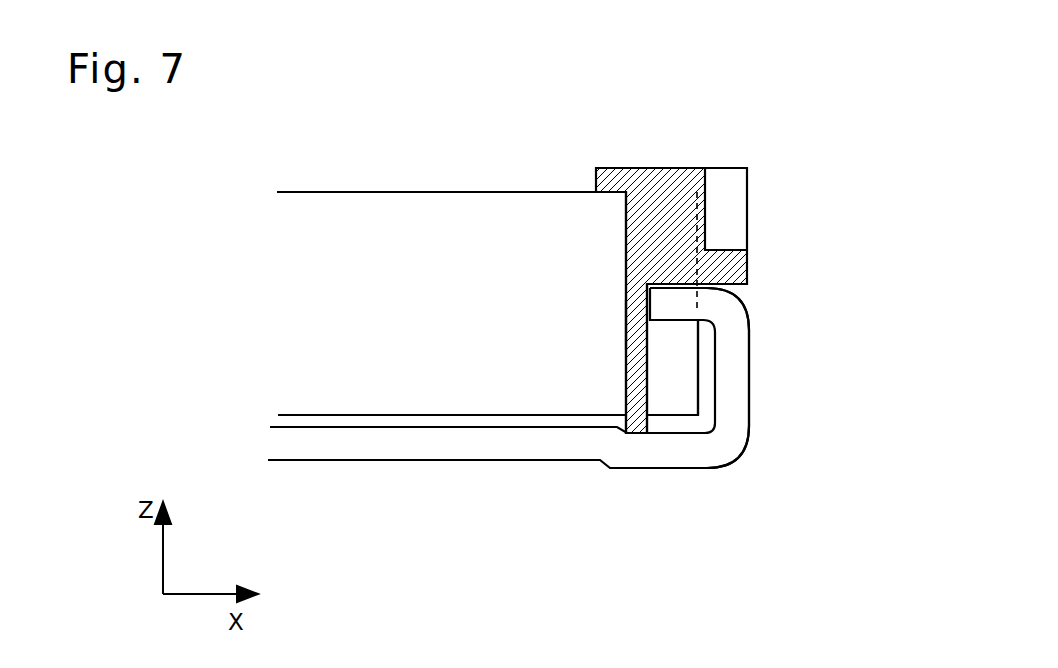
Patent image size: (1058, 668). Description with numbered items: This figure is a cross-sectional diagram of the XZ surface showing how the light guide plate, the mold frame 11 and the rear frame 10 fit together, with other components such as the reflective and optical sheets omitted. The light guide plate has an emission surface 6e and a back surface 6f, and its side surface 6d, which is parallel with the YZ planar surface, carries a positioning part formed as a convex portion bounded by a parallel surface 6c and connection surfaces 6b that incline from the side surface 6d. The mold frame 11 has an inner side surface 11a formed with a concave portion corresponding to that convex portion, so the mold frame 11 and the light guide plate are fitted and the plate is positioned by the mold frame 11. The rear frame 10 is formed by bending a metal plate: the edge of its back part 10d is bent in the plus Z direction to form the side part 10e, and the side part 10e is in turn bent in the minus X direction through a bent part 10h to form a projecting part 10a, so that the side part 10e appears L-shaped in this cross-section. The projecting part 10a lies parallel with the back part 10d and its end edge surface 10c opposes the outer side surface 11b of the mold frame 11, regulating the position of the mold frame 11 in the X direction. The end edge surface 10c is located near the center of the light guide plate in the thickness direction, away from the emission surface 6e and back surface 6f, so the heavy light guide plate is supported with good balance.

The connection surface 6b is at (670, 398).
The parallel surface 6c is at (705, 401).
The side surface 6d is at (625, 240).
The emission surface 6e is at (333, 192).
The back surface 6f is at (333, 415).
The rear frame 10 is at (277, 443).
The projecting part 10a is at (699, 309).
The end edge surface 10c is at (626, 323).
The back part 10d is at (412, 445).
The side part 10e is at (733, 395).
The bent part 10h is at (727, 320).
The mold frame 11 is at (650, 207).
The inner side surface 11a is at (626, 370).
The outer side surface 11b is at (707, 183).